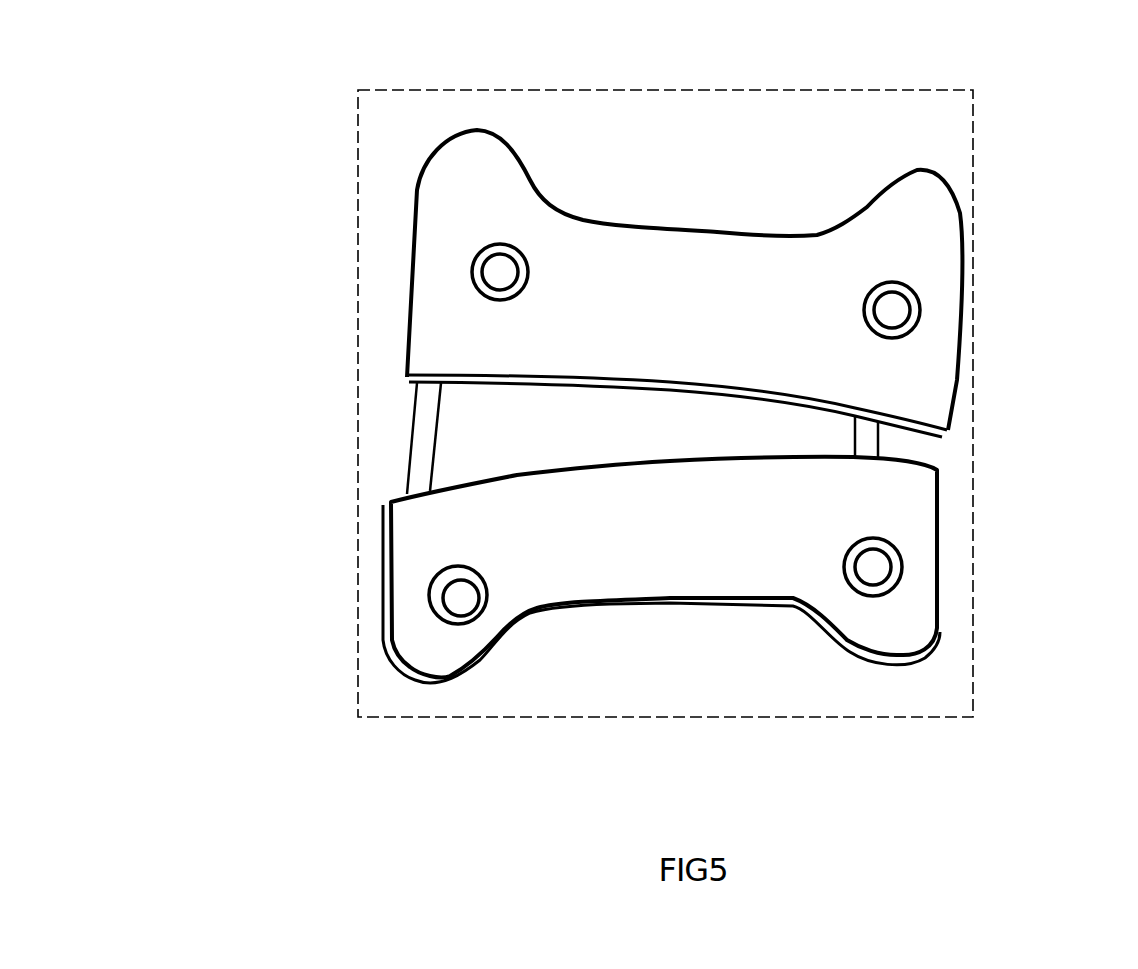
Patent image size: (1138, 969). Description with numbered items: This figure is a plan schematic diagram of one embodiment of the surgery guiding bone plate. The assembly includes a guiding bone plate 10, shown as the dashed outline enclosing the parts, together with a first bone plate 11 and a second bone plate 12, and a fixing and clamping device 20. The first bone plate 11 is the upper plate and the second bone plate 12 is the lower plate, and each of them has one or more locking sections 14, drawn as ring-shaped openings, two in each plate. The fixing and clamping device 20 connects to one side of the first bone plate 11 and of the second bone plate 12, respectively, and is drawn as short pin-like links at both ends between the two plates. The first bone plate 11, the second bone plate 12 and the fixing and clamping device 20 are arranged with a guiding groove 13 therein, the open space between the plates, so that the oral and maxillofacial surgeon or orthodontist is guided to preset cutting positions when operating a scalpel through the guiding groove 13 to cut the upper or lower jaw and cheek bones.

The guiding bone plate 10 is at (866, 718).
The first bone plate 11 is at (678, 250).
The second bone plate 12 is at (700, 563).
The guiding groove 13 is at (535, 433).
The locking section 14 is at (500, 263).
The fixing and clamping device 20 is at (417, 437).